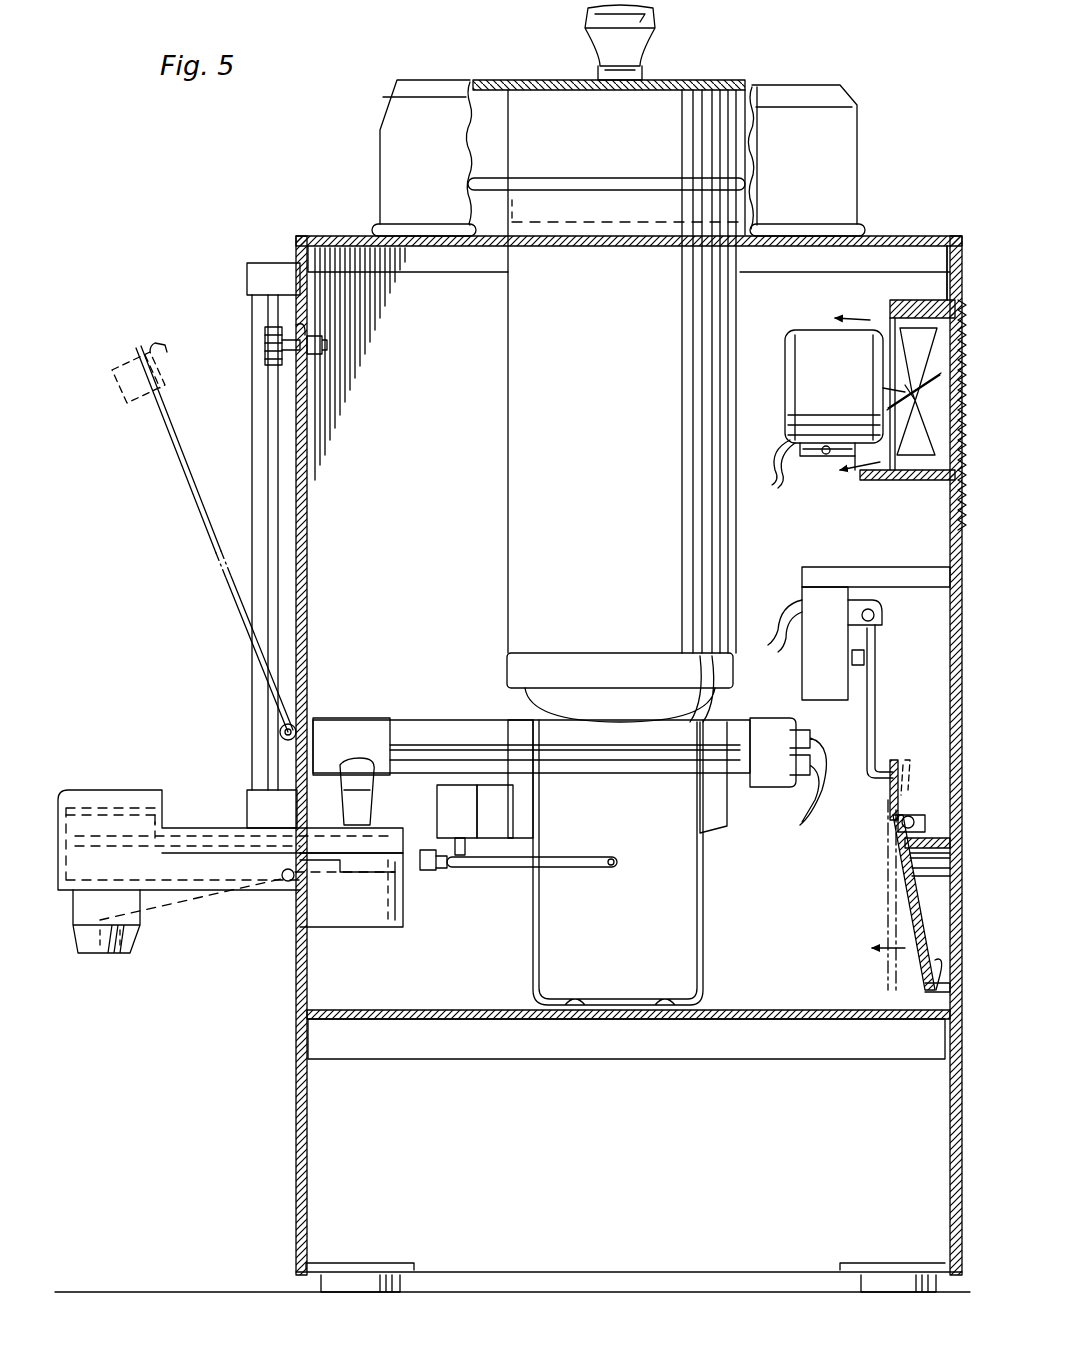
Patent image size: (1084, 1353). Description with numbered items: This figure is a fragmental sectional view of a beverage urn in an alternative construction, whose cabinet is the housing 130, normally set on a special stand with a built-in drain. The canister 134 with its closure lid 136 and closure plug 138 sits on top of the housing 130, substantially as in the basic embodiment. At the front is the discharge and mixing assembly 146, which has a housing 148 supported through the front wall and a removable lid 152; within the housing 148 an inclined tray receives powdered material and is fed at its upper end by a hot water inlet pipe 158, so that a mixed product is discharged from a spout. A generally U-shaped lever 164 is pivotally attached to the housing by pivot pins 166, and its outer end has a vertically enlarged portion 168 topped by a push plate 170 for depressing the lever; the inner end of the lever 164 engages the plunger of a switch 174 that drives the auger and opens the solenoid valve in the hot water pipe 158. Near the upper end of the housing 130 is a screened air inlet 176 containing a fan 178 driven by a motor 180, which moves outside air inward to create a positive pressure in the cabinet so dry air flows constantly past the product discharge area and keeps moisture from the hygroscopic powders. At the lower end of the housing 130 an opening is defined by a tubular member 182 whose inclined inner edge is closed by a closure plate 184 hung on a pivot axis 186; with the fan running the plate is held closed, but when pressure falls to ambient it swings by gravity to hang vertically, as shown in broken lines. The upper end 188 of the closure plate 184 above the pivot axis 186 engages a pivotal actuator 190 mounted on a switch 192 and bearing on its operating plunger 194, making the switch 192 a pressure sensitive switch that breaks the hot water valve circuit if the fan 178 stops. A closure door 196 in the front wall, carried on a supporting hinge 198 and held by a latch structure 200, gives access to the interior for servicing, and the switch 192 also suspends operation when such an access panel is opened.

The housing 130 is at (324, 214).
The canister 134 is at (520, 385).
The closure lid 136 is at (838, 128).
The closure plug 138 is at (730, 82).
The discharge and mixing assembly 146 is at (128, 768).
The housing 148 is at (375, 918).
The removable lid 152 is at (192, 830).
The hot water inlet pipe 158 is at (592, 868).
The lever 164 is at (192, 900).
The pivot pins 166 is at (286, 882).
The vertically enlarged portion 168 is at (150, 805).
The push plate 170 is at (98, 790).
The switch 174 is at (465, 814).
The screened air inlet 176 is at (912, 302).
The fan 178 is at (912, 440).
The motor 180 is at (815, 345).
The tubular member 182 is at (925, 965).
The closure plate 184 is at (905, 893).
The pivot axis 186 is at (900, 822).
The end of closure plate 188 is at (895, 760).
The pivotal actuator 190 is at (870, 705).
The switch 192 is at (822, 600).
The operating plunger 194 is at (860, 660).
The closure door 196 is at (305, 478).
The supporting hinge 198 is at (280, 735).
The latch structure 200 is at (268, 340).